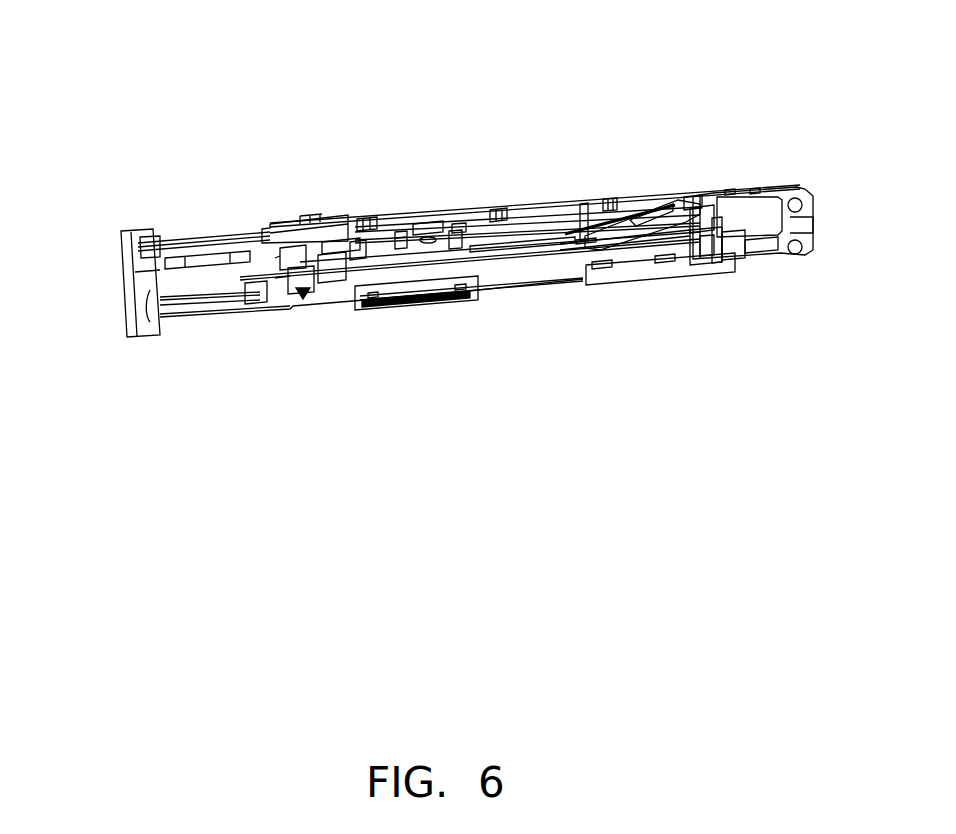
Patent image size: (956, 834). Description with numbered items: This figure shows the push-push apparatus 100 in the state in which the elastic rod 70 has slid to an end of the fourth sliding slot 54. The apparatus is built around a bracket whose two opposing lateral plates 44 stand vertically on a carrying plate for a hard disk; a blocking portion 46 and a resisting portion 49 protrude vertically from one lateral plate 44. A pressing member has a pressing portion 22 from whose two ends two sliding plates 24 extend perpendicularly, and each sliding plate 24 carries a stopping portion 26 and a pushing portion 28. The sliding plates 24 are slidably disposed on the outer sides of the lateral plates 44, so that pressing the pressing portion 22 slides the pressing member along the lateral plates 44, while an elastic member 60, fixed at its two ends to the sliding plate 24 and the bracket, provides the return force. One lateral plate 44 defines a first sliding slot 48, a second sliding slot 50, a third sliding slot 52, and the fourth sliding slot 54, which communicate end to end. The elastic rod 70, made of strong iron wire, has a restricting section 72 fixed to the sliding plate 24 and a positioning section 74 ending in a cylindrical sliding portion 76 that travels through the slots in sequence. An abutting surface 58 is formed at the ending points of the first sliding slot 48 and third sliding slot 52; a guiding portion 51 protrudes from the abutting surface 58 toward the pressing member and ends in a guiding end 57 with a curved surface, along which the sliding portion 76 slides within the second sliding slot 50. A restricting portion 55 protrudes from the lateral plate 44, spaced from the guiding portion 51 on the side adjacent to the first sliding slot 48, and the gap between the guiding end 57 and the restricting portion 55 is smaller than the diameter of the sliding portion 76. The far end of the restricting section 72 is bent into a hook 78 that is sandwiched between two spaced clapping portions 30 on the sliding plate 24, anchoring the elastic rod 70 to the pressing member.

The push-push apparatus 100 is at (450, 77).
The pressing portion 22 is at (134, 235).
The sliding plate 24 is at (200, 251).
The stopping portion 26 is at (427, 223).
The pushing portion 28 is at (465, 228).
The clapping portion 30 is at (340, 214).
The lateral plate 44 is at (605, 203).
The blocking portion 46 is at (418, 216).
The first sliding slot 48 is at (636, 232).
The resisting portion 49 is at (580, 254).
The second sliding slot 50 is at (698, 228).
The guiding portion 51 is at (717, 221).
The third sliding slot 52 is at (725, 228).
The fourth sliding slot 54 is at (638, 228).
The restricting portion 55 is at (690, 207).
The guiding end 57 is at (696, 210).
The abutting surface 58 is at (740, 190).
The elastic member 60 is at (387, 308).
The elastic rod 70 is at (508, 366).
The restricting section 72 is at (385, 242).
The positioning section 74 is at (503, 238).
The sliding portion 76 is at (586, 236).
The hook 78 is at (357, 252).